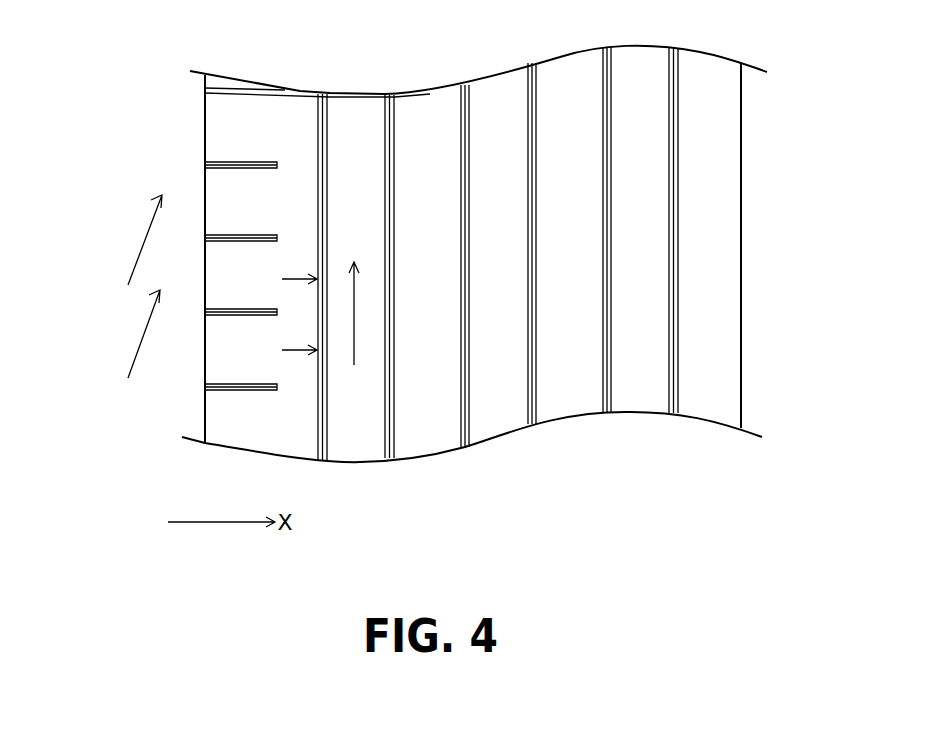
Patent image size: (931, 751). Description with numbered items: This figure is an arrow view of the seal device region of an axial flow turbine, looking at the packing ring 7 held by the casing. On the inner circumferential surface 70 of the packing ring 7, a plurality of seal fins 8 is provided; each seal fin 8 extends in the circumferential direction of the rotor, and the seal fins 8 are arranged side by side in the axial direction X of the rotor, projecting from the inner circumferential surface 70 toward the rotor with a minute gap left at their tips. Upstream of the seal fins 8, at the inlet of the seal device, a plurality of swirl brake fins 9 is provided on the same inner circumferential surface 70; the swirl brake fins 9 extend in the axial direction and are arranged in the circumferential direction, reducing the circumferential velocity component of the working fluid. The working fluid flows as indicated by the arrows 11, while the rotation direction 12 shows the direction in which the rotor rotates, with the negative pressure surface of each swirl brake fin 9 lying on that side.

The packing ring 7 is at (761, 165).
The inner circumferential surface 70 is at (710, 250).
The seal fin 8 is at (328, 395).
The swirl brake fin 9 is at (212, 161).
The working fluid flow arrow 11 is at (142, 248).
The rotation direction 12 is at (354, 320).